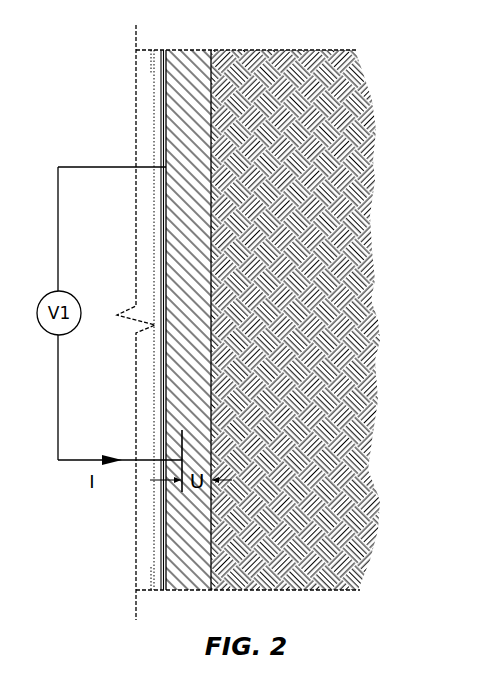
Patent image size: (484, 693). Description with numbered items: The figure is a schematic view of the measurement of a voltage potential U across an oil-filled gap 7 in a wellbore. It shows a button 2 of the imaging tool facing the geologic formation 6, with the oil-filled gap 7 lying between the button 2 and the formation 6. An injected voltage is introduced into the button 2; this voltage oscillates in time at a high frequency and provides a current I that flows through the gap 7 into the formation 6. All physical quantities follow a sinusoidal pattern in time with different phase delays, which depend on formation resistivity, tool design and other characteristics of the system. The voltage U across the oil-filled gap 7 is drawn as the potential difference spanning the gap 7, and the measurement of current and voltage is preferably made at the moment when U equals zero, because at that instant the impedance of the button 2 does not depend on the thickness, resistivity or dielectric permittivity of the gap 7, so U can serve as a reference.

The button 2 is at (181, 450).
The geologic formation 6 is at (318, 38).
The oil-filled gap 7 is at (178, 533).